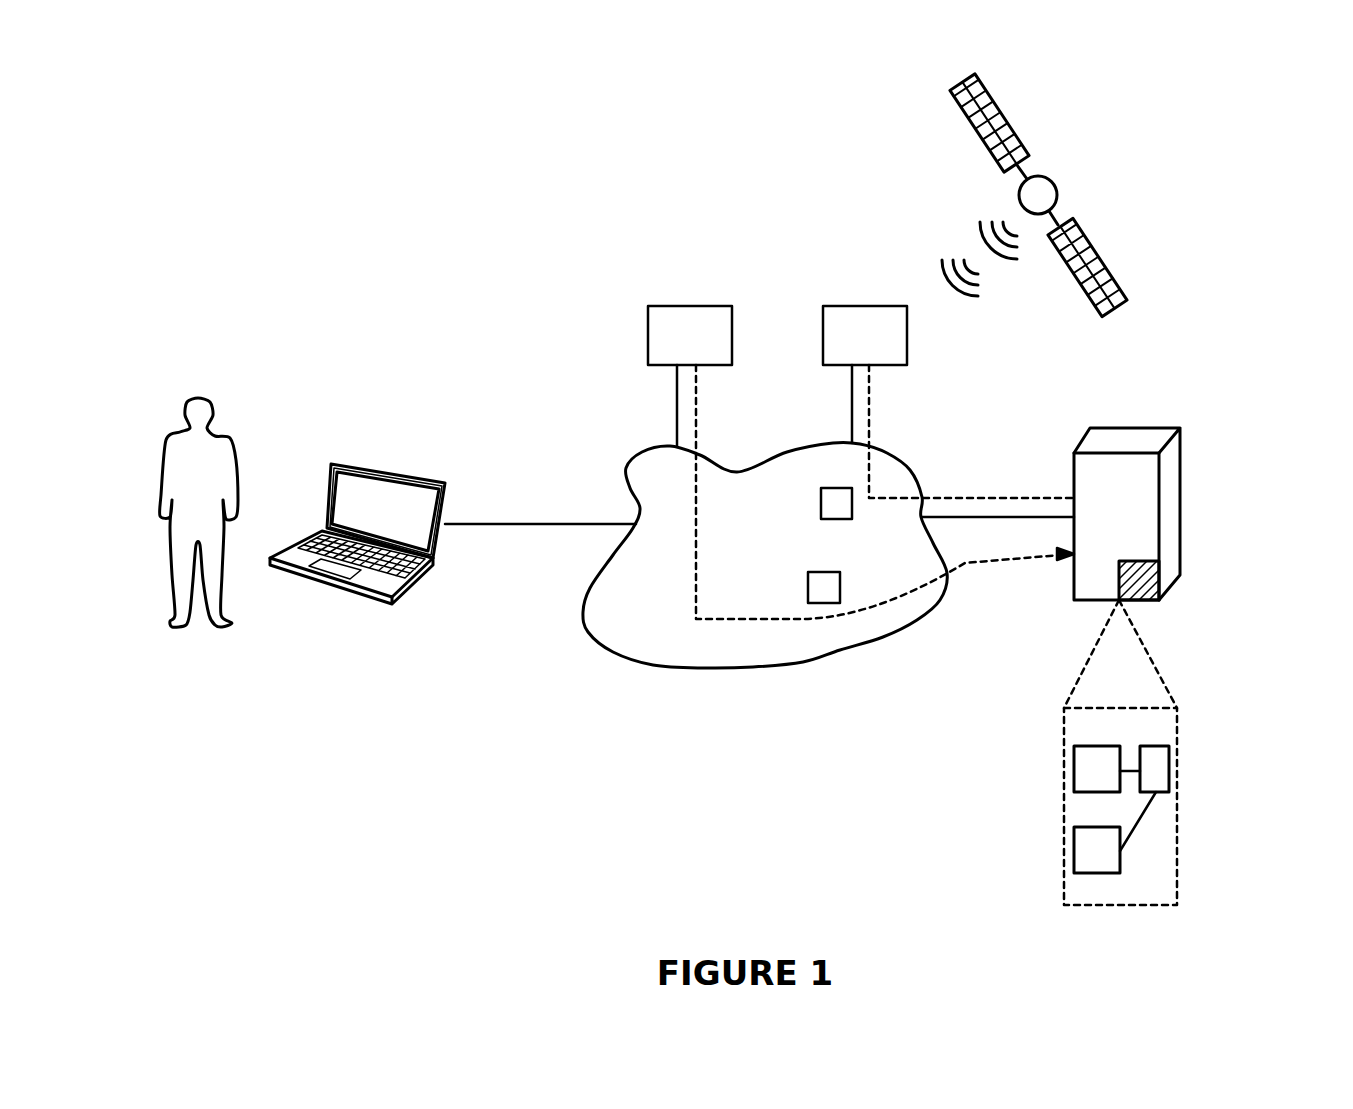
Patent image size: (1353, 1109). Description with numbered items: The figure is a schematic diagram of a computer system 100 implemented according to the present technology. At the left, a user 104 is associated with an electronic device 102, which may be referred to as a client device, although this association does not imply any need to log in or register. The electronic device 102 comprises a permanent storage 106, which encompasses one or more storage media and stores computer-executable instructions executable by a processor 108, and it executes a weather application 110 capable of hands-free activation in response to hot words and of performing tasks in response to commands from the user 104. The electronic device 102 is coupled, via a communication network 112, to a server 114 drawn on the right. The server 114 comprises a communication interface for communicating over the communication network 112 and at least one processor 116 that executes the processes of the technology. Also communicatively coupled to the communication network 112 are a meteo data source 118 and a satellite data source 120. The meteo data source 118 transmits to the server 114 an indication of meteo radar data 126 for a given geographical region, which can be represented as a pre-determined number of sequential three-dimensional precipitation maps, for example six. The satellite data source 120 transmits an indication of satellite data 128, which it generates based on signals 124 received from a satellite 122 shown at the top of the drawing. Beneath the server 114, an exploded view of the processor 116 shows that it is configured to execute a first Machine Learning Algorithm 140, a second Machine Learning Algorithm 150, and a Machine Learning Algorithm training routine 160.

The computer system 100 is at (327, 336).
The electronic device 102 is at (402, 510).
The user 104 is at (173, 433).
The permanent storage 106 is at (421, 562).
The processor 108 is at (417, 475).
The weather application 110 is at (378, 518).
The communication network 112 is at (782, 562).
The server 114 is at (1139, 534).
The processor 116 is at (1142, 562).
The meteo data source 118 is at (666, 351).
The satellite data source 120 is at (841, 351).
The satellite 122 is at (1068, 163).
The signals 124 is at (949, 217).
The meteo radar data 126 is at (825, 603).
The satellite data 128 is at (821, 494).
The first Machine Learning Algorithm 140 is at (1074, 771).
The second Machine Learning Algorithm 150 is at (1074, 855).
The Machine Learning Algorithm training routine 160 is at (1169, 771).